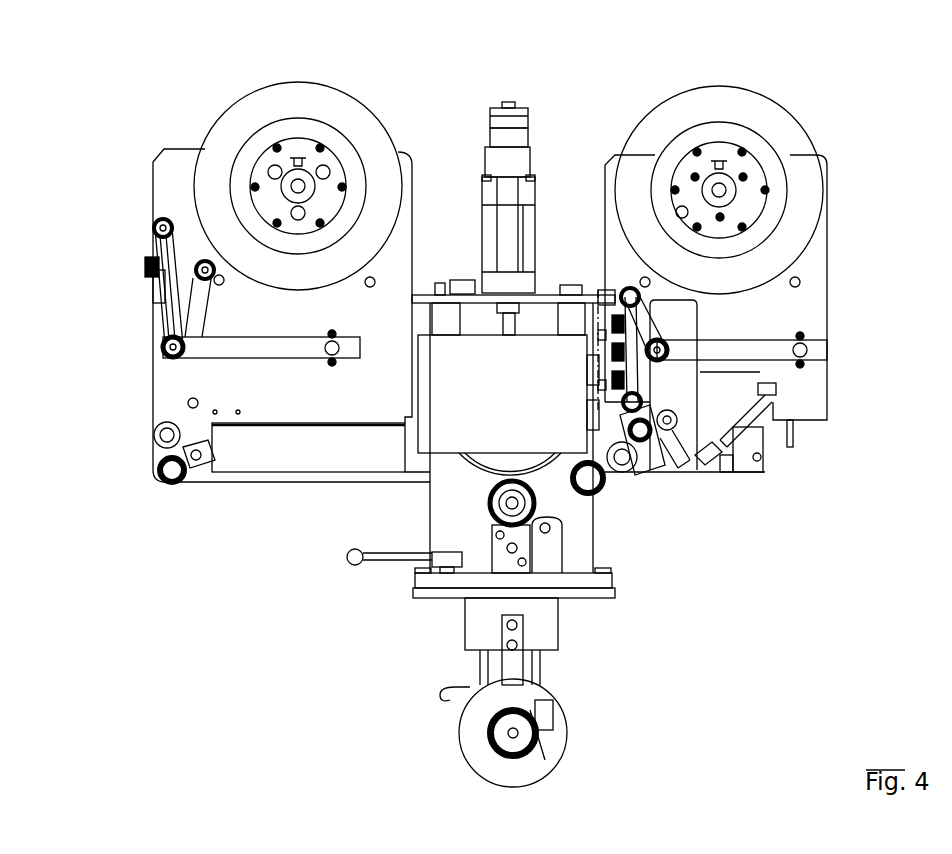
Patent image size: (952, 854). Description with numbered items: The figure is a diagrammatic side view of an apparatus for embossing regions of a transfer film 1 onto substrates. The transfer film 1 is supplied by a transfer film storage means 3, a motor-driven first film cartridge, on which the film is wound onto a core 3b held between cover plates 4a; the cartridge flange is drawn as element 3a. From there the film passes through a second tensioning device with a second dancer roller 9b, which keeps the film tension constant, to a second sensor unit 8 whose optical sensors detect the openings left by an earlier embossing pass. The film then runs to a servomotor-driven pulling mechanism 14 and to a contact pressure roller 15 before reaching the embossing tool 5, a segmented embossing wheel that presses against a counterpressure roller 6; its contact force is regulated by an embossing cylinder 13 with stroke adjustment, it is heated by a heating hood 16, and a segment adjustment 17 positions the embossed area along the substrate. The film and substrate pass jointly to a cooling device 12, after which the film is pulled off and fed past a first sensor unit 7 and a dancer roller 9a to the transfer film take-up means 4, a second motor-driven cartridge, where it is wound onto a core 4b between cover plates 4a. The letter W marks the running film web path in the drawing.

The transfer film 1 is at (658, 283).
The transfer film storage means 3 is at (705, 85).
The right reel flange 3a is at (768, 105).
The core of the first film cartridge 3b is at (765, 163).
The transfer film take-up means 4 is at (291, 83).
The cover plates 4a is at (251, 108).
The core of the second film cartridge 4b is at (262, 155).
The embossing tool 5 is at (553, 480).
The counterpressure roller 6 is at (488, 510).
The first sensor unit 7 is at (145, 263).
The second sensor unit 8 is at (633, 338).
The dancer roller 9a is at (162, 340).
The second dancer roller 9b is at (767, 358).
The cooling device 12 is at (290, 470).
The embossing cylinder 13 is at (507, 175).
The pulling mechanism 14 is at (748, 463).
The contact pressure roller 15 is at (680, 425).
The heating hood 16 is at (670, 470).
The segment adjustment 17 is at (512, 734).
The web W is at (700, 376).